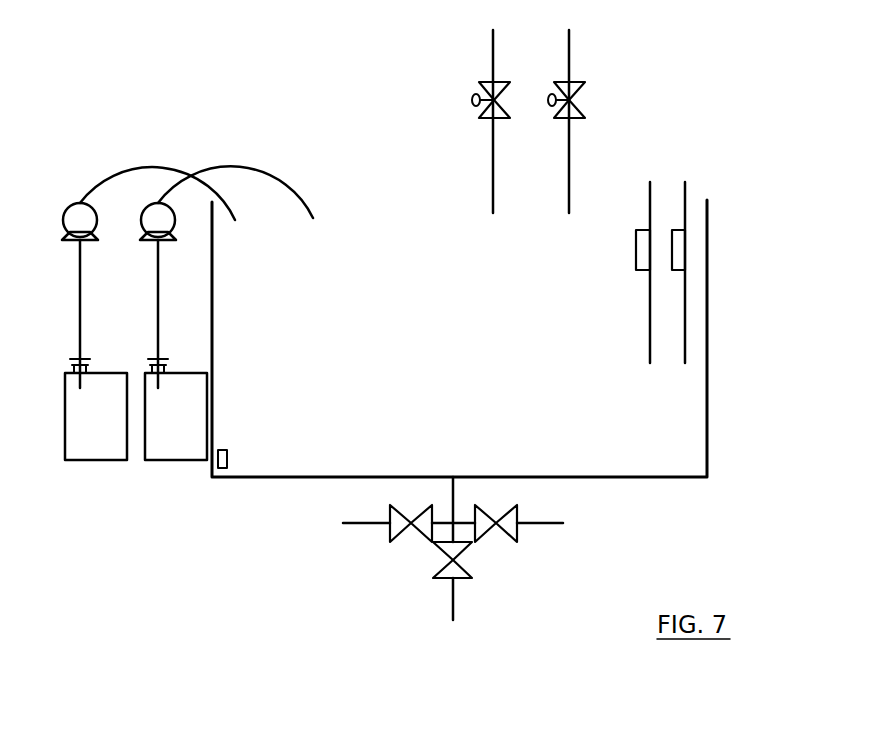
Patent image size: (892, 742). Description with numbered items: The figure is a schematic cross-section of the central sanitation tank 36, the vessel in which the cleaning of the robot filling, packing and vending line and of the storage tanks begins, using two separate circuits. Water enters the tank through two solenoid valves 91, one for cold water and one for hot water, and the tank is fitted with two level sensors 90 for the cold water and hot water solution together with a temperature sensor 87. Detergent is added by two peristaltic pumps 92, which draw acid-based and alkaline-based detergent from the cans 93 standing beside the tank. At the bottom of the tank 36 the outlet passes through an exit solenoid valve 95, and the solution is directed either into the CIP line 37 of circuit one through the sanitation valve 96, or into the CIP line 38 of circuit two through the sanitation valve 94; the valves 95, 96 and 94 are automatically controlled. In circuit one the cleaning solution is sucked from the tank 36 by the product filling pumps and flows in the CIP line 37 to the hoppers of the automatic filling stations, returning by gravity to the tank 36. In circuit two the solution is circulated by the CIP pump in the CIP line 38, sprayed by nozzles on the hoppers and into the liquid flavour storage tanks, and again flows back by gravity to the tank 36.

The central sanitation tank 36 is at (448, 347).
The CIP line 37 is at (542, 527).
The CIP line 38 is at (365, 525).
The temperature sensor 87 is at (228, 452).
The level sensors 90 is at (651, 233).
The solenoid valves 91 is at (552, 96).
The peristaltic pumps 92 is at (150, 207).
The cans 93 is at (90, 437).
The sanitation valve 94 is at (516, 545).
The exit solenoid valve 95 is at (455, 572).
The sanitation valve 96 is at (392, 545).